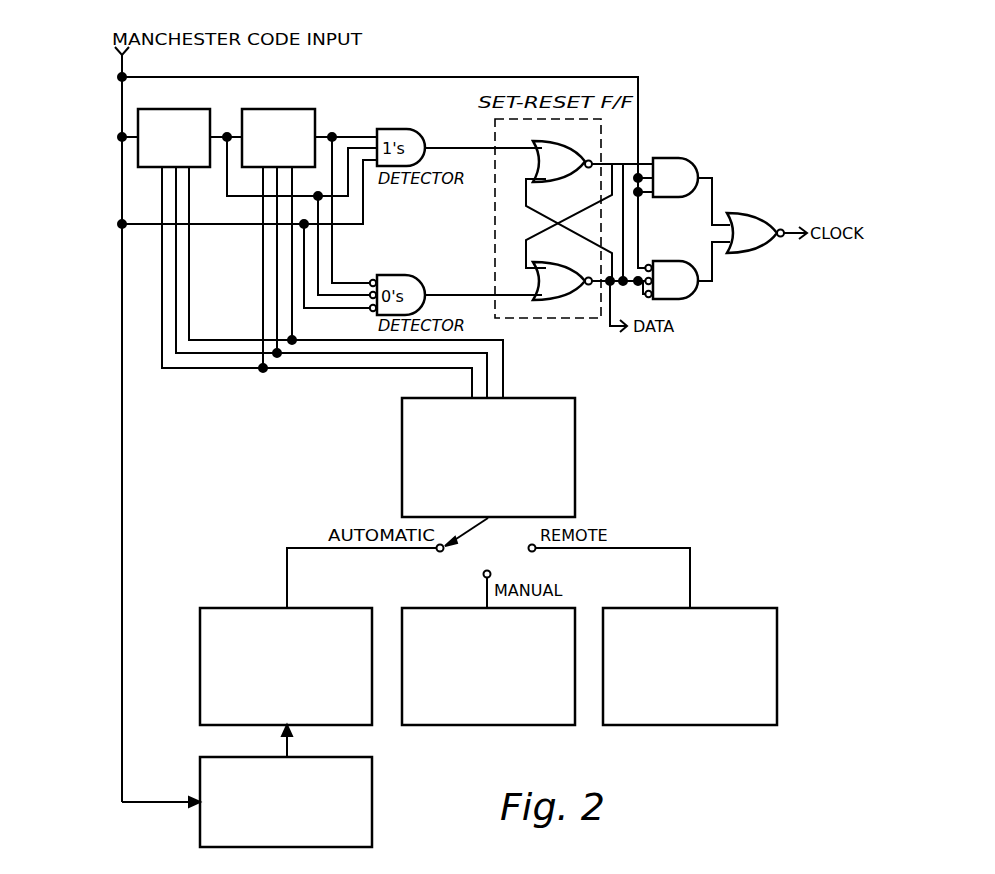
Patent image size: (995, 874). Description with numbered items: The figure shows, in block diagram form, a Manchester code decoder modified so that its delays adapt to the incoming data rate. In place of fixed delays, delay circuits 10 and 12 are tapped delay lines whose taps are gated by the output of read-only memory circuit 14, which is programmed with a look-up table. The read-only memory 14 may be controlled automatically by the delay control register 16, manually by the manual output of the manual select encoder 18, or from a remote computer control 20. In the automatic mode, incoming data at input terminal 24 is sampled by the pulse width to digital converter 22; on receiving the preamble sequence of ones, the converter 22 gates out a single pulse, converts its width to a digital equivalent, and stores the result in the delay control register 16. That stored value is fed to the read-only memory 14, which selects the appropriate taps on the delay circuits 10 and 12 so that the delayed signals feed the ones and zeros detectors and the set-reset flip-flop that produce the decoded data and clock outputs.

The delay circuit 10 is at (176, 127).
The delay circuit 12 is at (280, 127).
The read-only memory circuit 14 is at (577, 398).
The delay control register 16 is at (230, 607).
The manual select encoder 18 is at (508, 725).
The remote computer control 20 is at (748, 606).
The pulse width to digital converter 22 is at (375, 796).
The input terminal 24 is at (118, 55).